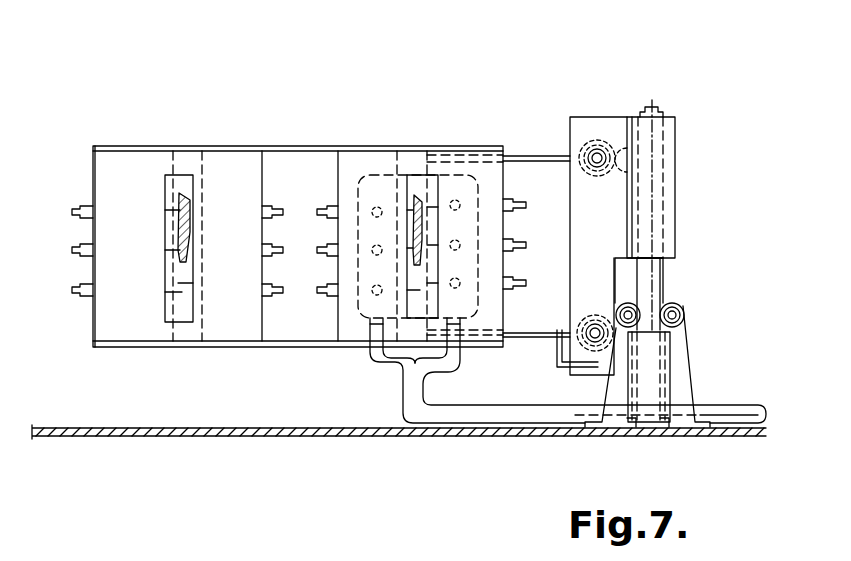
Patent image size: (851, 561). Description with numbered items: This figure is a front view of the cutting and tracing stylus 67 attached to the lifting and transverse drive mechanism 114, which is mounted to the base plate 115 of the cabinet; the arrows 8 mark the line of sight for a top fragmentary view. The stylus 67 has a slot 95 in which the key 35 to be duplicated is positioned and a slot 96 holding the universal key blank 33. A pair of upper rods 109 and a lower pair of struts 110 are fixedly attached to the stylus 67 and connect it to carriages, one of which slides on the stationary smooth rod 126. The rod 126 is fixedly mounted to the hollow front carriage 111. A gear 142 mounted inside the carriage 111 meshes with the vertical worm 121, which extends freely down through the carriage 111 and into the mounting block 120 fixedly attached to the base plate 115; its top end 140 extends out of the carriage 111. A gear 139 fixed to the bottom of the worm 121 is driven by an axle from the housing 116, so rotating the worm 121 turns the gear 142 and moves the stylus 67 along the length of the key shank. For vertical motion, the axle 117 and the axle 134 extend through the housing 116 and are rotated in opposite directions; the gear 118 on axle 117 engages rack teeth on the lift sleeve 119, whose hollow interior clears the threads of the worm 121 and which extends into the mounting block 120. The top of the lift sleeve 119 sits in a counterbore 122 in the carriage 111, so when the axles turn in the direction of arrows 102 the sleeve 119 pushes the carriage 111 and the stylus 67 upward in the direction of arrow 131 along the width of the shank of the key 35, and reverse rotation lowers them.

The arrows 8— 8 is at (512, 70).
The stylus 67 is at (318, 127).
The slot 95 is at (178, 186).
The key 35 is at (184, 210).
The slot 96 is at (412, 188).
The universal key blank 33 is at (421, 214).
The upper rods 109 is at (537, 157).
The lower struts 110 is at (517, 333).
The front carriage 111 is at (577, 220).
The lifting and transverse drive mechanism 114 is at (598, 110).
The base plate 115 is at (238, 428).
The housing 116 is at (684, 362).
The axle 117 is at (684, 307).
The gear 118 is at (684, 318).
The lift sleeve 119 is at (665, 281).
The mounting block 120 is at (668, 404).
The worm 121 is at (657, 197).
The counterbore 122 is at (650, 254).
The smooth rod 126 is at (592, 338).
The arrow 131 is at (788, 170).
The axle 134 is at (622, 311).
The gear 139 is at (638, 422).
The top end 140 is at (662, 110).
The gear 142 is at (615, 177).
The arrows 102 is at (662, 300).